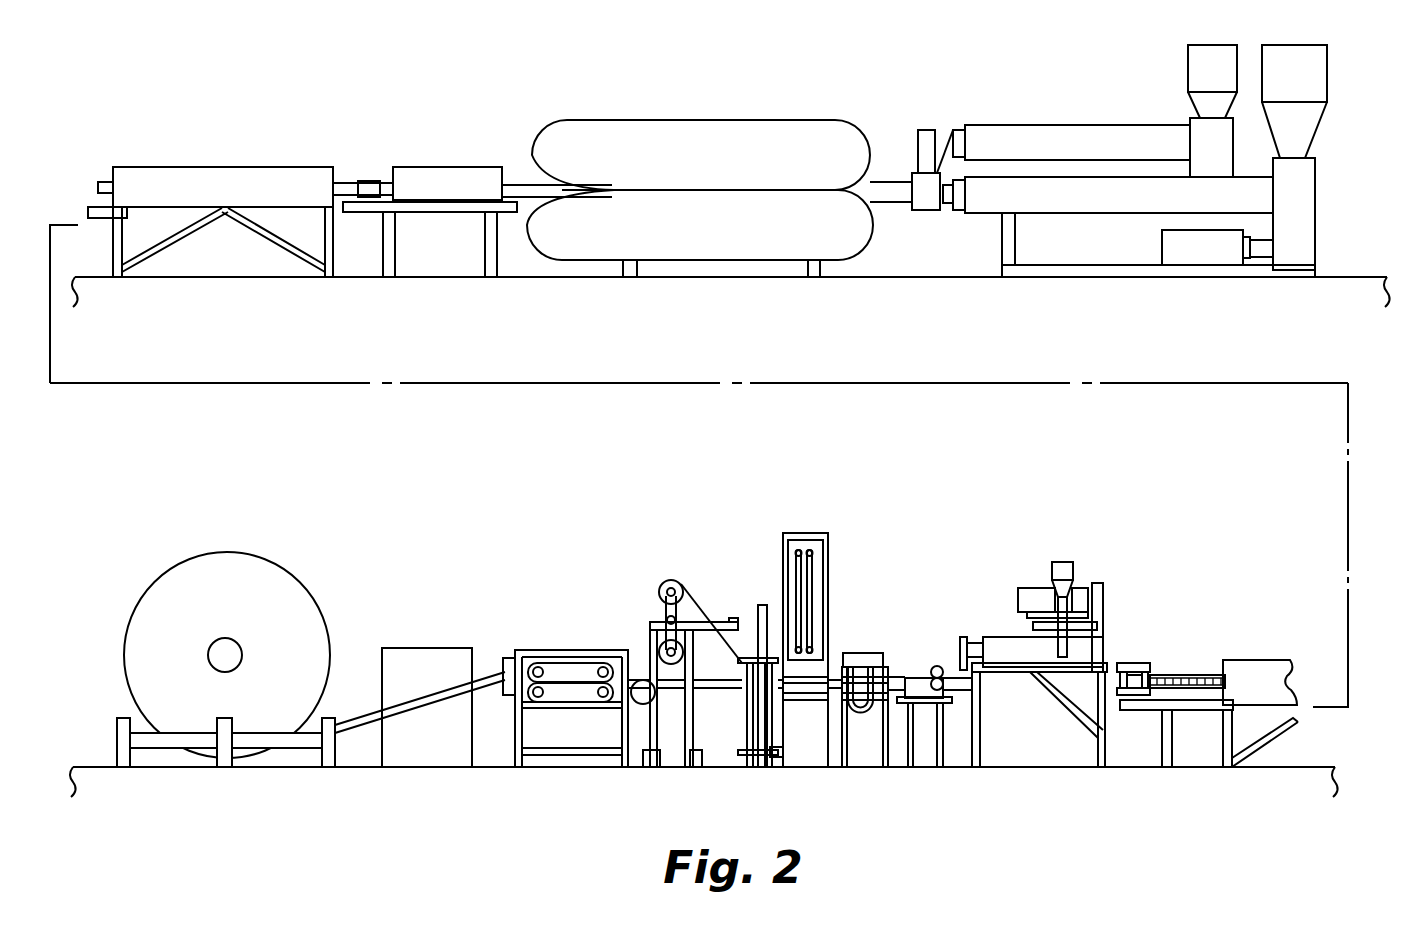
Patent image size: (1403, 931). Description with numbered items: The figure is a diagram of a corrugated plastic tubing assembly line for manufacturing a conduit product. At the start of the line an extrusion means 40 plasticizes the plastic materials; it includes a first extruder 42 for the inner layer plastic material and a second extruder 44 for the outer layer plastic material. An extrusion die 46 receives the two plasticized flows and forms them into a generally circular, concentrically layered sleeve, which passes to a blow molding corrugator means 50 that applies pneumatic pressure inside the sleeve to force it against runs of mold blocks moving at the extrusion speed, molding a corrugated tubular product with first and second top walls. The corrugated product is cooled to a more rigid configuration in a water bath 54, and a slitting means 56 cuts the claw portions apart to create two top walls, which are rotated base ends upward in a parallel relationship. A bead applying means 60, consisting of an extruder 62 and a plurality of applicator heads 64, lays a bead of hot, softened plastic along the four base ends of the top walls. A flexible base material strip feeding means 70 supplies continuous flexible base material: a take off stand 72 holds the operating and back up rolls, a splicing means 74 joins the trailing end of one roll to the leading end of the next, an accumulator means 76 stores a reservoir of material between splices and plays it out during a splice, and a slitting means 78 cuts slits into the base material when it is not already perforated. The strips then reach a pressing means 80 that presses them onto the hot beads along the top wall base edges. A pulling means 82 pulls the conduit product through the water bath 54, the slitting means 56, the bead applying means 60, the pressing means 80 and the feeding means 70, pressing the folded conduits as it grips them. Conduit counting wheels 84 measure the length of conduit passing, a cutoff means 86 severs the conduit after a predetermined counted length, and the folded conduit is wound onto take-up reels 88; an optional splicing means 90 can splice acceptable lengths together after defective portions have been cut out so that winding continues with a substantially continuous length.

The extrusion means 40 is at (1140, 161).
The first extruder 42 is at (1060, 204).
The second extruder 44 is at (1050, 140).
The extrusion die 46 is at (922, 211).
The blow molding corrugator means 50 is at (724, 112).
The water bath 54 is at (274, 179).
The slitting means 56 is at (1155, 652).
The bead applying means 60 is at (1038, 655).
The extruder 62 is at (1022, 654).
The applicator heads 64 is at (961, 647).
The flexible base material strip feeding means 70 is at (766, 654).
The take off stand 72 is at (701, 596).
The splicing means 74 is at (754, 599).
The accumulator means 76 is at (848, 566).
The slitting means 78 is at (873, 646).
The pressing means 80 is at (928, 774).
The pulling means 82 is at (569, 642).
The conduit counting wheels 84 is at (639, 670).
The cutoff means 86 is at (511, 646).
The take-up reels 88 is at (174, 602).
The splicing means 90 is at (415, 648).